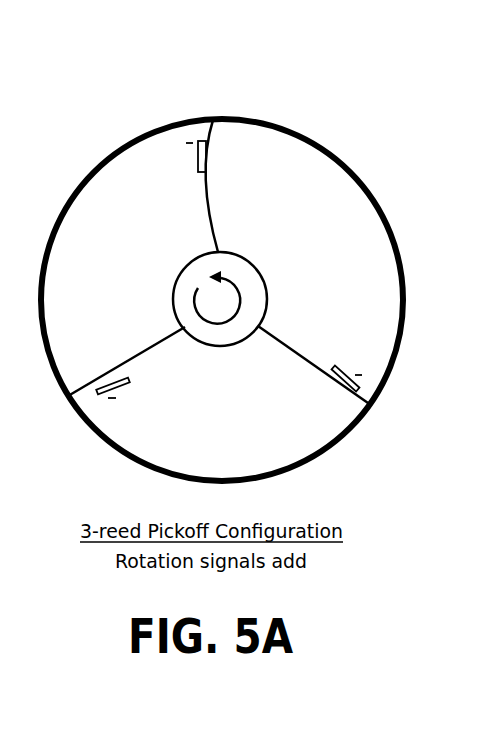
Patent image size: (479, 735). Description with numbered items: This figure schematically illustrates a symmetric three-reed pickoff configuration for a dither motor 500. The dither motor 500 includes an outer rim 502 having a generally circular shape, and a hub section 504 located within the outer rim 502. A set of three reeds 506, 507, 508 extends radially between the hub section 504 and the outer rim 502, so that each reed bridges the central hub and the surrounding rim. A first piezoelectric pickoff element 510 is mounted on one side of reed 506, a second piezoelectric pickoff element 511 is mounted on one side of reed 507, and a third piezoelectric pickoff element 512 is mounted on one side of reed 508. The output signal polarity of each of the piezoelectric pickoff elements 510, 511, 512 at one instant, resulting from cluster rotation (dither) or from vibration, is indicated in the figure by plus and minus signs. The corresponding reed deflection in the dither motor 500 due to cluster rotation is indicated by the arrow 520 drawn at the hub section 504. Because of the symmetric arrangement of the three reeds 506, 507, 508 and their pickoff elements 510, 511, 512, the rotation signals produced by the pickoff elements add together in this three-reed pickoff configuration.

The dither motor 500 is at (119, 82).
The outer rim 502 is at (360, 177).
The hub section 504 is at (268, 296).
The reed 506 is at (143, 353).
The reed 507 is at (211, 217).
The reed 508 is at (303, 358).
The first piezoelectric pickoff element 510 is at (126, 385).
The second piezoelectric pickoff element 511 is at (197, 149).
The third piezoelectric pickoff element 512 is at (347, 369).
The arrow 520 is at (176, 296).